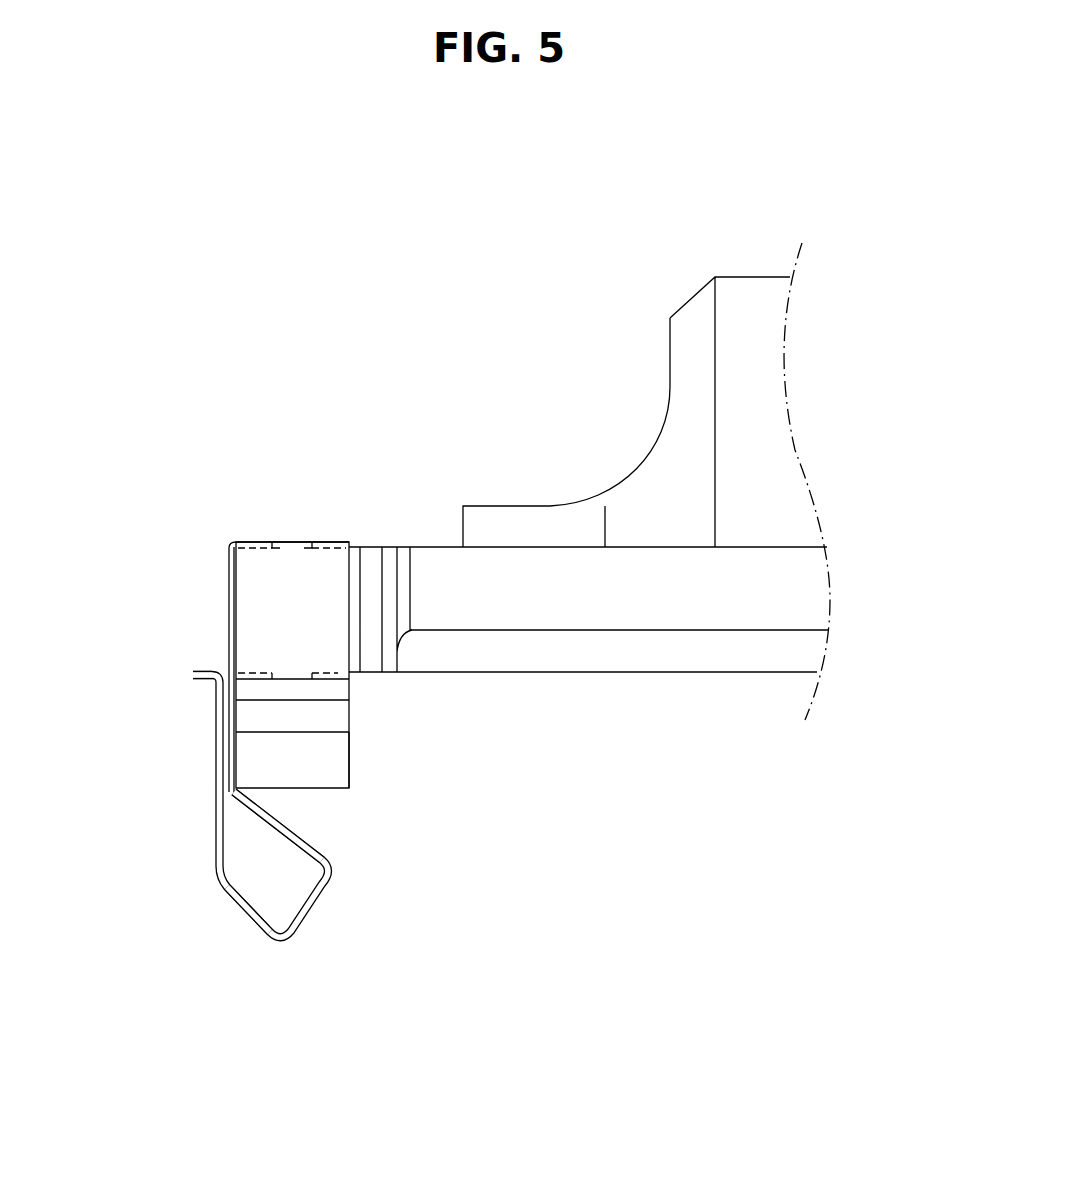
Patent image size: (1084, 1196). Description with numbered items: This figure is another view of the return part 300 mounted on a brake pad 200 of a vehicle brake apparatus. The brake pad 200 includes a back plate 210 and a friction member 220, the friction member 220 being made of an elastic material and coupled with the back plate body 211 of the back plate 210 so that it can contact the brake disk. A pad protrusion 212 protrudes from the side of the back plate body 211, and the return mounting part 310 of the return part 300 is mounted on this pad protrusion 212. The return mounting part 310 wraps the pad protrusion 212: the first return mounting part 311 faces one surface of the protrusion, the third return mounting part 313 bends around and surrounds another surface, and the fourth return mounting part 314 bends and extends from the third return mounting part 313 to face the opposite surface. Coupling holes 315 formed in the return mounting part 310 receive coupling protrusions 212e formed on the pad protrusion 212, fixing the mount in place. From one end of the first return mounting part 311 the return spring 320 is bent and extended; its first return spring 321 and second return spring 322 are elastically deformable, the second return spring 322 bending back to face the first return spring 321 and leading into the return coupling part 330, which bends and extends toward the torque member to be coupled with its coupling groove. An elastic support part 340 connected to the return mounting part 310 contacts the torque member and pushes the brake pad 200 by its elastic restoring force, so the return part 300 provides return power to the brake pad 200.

The brake pad 200 is at (645, 511).
The back plate 210 is at (588, 673).
The back plate body 211 is at (675, 650).
The pad protrusion 212 is at (370, 652).
The coupling protrusion 212e is at (298, 545).
The friction member 220 is at (692, 320).
The return part 300 is at (286, 715).
The return mounting part 310 is at (289, 597).
The first return mounting part 311 is at (232, 603).
The third return mounting part 313 is at (253, 540).
The fourth return mounting part 314 is at (338, 674).
The coupling hole 315 is at (272, 548).
The return spring 320 is at (256, 838).
The first return spring 321 is at (301, 841).
The second return spring 322 is at (242, 912).
The return coupling part 330 is at (182, 677).
The elastic support part 340 is at (351, 780).